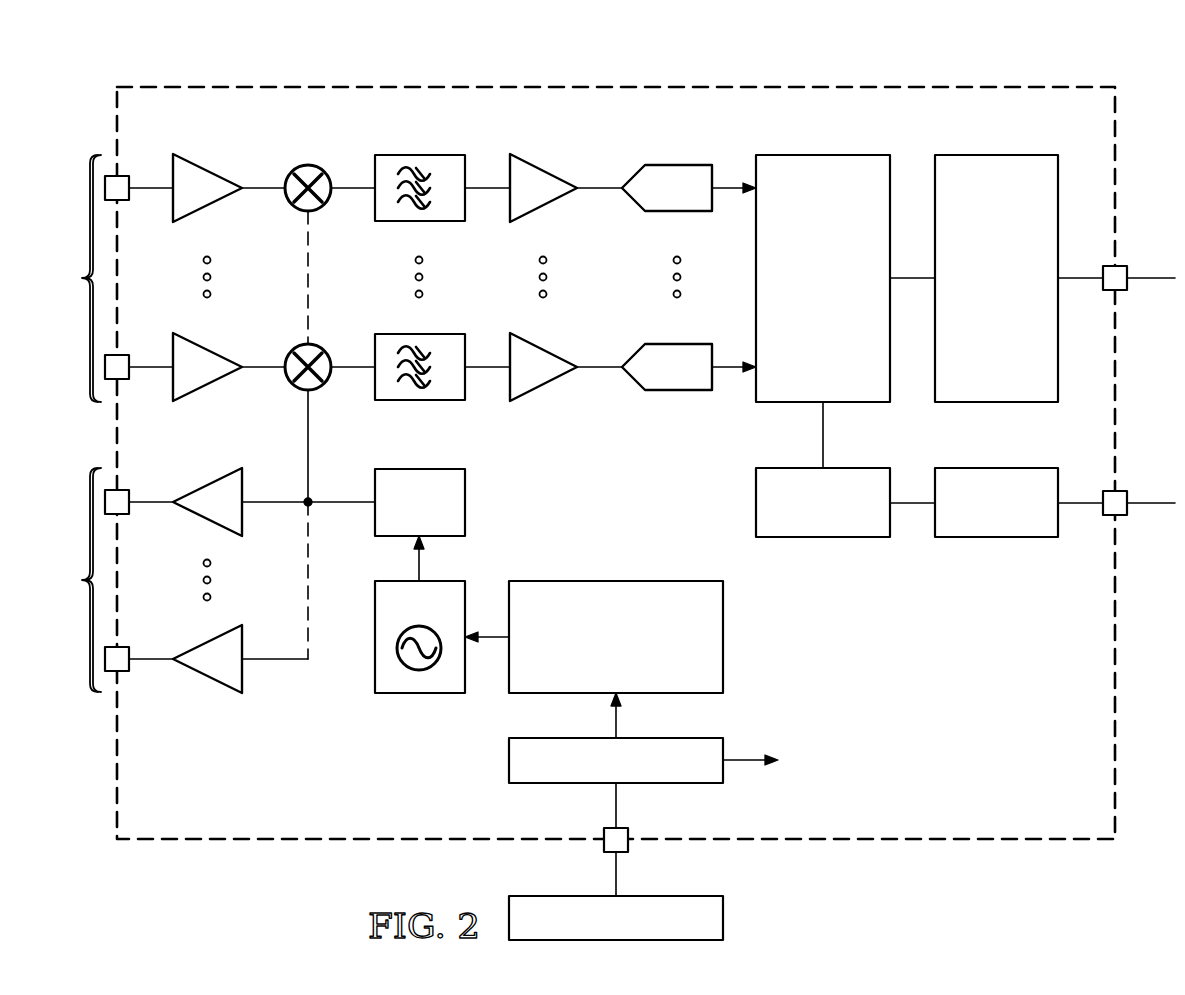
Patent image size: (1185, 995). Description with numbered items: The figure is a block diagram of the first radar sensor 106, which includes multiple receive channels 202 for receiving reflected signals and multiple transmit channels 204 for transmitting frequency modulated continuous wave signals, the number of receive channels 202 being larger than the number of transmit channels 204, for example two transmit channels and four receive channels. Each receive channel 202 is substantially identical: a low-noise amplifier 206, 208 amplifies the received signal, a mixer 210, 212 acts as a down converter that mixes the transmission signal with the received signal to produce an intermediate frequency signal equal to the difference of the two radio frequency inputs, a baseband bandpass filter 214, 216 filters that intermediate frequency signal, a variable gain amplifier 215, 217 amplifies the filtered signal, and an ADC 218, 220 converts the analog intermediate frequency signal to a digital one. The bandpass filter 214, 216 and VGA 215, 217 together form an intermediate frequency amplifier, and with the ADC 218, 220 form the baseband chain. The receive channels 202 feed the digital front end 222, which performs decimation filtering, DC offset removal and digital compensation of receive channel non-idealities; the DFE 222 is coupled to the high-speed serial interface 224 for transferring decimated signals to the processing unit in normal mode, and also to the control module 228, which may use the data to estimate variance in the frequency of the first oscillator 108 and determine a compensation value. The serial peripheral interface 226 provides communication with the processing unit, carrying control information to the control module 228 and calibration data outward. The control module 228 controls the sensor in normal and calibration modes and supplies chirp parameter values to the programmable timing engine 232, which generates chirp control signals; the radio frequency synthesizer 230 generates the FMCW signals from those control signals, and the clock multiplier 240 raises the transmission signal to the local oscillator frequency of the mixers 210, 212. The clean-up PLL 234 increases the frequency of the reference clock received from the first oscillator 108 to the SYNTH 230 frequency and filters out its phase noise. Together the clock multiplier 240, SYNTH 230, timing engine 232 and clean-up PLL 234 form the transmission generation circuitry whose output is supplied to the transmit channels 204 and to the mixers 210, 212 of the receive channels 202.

The first radar sensor 106 is at (436, 80).
The receive channels 202 is at (82, 278).
The transmit channels 204 is at (82, 580).
The low-noise amplifier 206 is at (208, 171).
The low-noise amplifier 208 is at (208, 385).
The mixer 210 is at (297, 168).
The mixer 212 is at (297, 389).
The baseband bandpass filter 214 is at (418, 153).
The baseband bandpass filter 216 is at (418, 402).
The variable gain amplifier 215 is at (548, 174).
The variable gain amplifier 217 is at (548, 382).
The ADC 218 is at (675, 166).
The ADC 220 is at (677, 392).
The digital front end component 222 is at (826, 155).
The high-speed serial interface 224 is at (998, 155).
The serial peripheral interface 226 is at (1020, 537).
The control module 228 is at (855, 537).
The radio frequency synthesizer 230 is at (406, 693).
The programmable timing engine 232 is at (723, 649).
The clean-up PLL 234 is at (723, 772).
The clock multiplier 240 is at (465, 513).
The first oscillator 108 is at (723, 918).